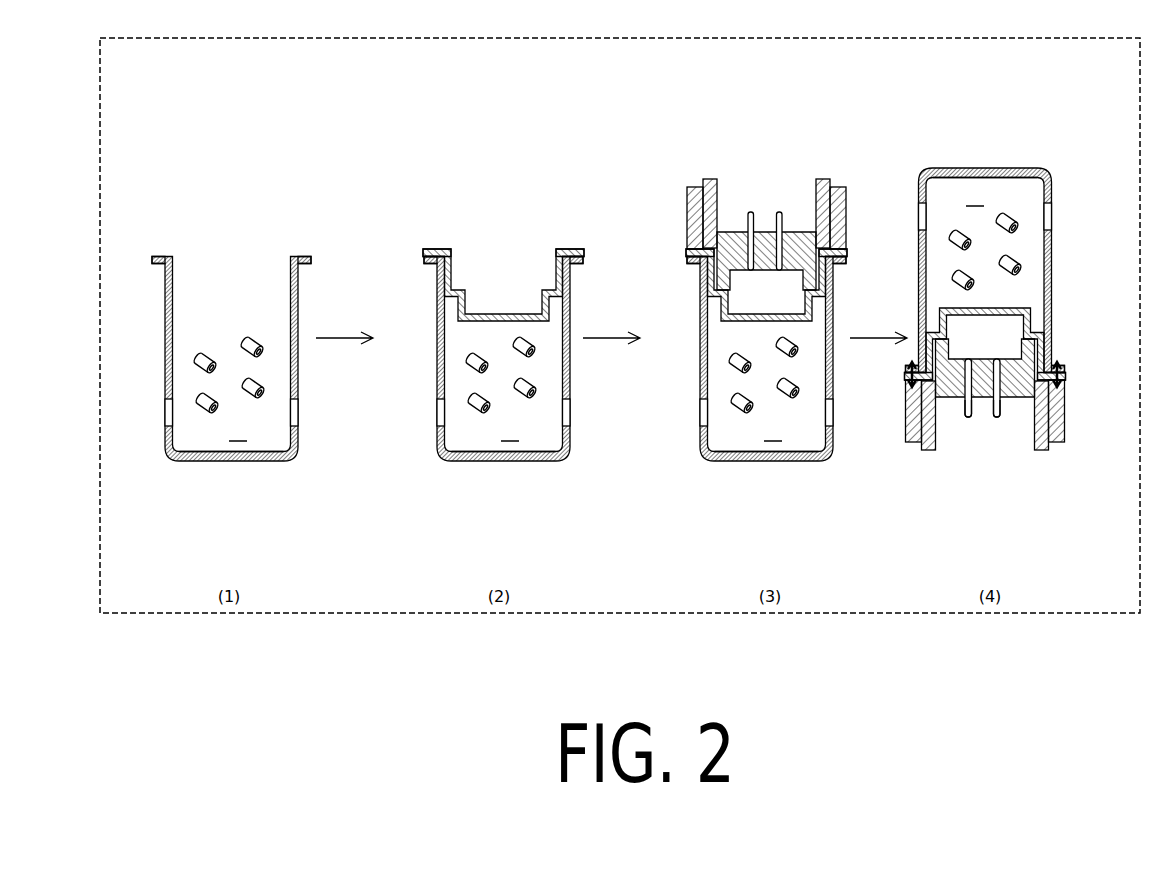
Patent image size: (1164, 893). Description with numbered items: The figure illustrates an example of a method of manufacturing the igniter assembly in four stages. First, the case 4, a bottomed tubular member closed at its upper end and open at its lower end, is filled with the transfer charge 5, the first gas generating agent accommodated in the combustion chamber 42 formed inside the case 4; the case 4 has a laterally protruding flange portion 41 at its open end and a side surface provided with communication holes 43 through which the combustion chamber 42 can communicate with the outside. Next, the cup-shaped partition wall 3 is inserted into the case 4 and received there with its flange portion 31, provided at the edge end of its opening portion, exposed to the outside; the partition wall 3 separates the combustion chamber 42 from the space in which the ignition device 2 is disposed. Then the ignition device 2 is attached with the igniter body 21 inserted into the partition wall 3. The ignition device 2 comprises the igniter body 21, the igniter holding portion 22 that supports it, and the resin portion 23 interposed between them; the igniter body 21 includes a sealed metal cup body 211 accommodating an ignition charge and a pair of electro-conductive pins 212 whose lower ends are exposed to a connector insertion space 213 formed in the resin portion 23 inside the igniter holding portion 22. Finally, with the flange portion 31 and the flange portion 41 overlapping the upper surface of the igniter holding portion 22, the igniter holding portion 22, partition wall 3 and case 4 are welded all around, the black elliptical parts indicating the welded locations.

The ignition device 2 is at (875, 315).
The igniter body 21 is at (876, 316).
The cup body 211 is at (792, 280).
The electro-conductive pins 212 is at (745, 223).
The connector insertion space 213 is at (977, 444).
The igniter holding portion 22 is at (698, 188).
The resin portion 23 is at (708, 179).
The partition wall 3 is at (743, 315).
The flange portion 31 is at (422, 253).
The case 4 is at (623, 316).
The flange portion 41 is at (160, 267).
The combustion chamber 42 is at (609, 315).
The communication holes 43 is at (1047, 218).
The transfer charge 5 is at (200, 368).